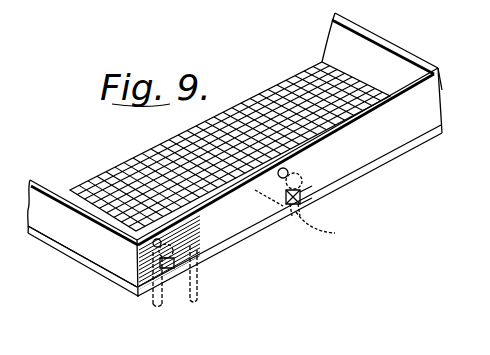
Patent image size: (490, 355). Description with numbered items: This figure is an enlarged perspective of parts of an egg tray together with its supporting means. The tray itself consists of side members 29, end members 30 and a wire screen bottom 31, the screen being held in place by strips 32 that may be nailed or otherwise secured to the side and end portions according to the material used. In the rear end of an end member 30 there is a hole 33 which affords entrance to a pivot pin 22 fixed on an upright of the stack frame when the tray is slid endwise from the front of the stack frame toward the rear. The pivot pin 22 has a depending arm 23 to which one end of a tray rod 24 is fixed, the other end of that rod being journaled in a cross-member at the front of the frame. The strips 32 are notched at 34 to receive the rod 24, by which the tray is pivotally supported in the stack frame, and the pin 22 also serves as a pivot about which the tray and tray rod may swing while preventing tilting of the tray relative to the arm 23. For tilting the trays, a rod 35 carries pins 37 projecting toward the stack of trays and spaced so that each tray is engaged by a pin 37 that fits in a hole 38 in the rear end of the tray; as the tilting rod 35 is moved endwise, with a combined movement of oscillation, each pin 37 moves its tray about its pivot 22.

The pivot pin 22 is at (312, 192).
The depending arm 23 is at (306, 216).
The tray rod 24 is at (315, 234).
The side member 29 is at (38, 172).
The end member 30 is at (441, 70).
The wire screen bottom 31 is at (138, 157).
The strip 32 is at (417, 139).
The hole 33 is at (284, 169).
The notch 34 is at (288, 206).
The tilting rod 35 is at (180, 306).
The pin 37 is at (207, 262).
The hole 38 is at (133, 275).